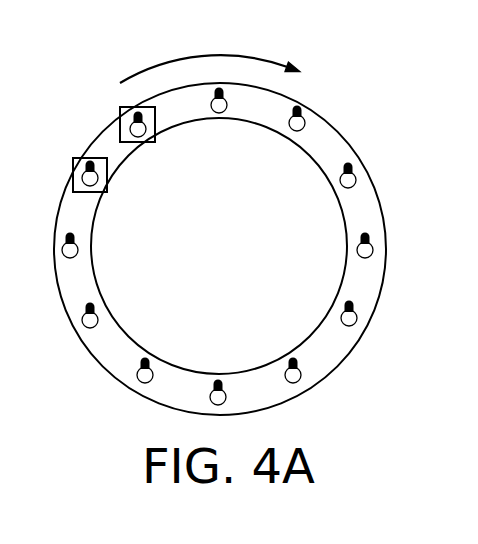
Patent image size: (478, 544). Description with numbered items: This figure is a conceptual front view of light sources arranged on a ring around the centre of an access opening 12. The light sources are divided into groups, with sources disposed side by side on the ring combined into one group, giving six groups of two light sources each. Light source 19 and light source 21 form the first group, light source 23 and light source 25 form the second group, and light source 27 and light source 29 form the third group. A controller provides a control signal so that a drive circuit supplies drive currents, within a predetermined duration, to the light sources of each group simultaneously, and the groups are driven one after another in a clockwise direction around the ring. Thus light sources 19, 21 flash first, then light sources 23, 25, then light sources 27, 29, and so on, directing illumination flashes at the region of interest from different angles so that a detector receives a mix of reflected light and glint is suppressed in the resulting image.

The access opening 12 is at (210, 254).
The light source 19 is at (73, 178).
The light source 21 is at (128, 121).
The light source 23 is at (221, 90).
The light source 25 is at (300, 120).
The light source 27 is at (355, 182).
The light source 29 is at (372, 252).